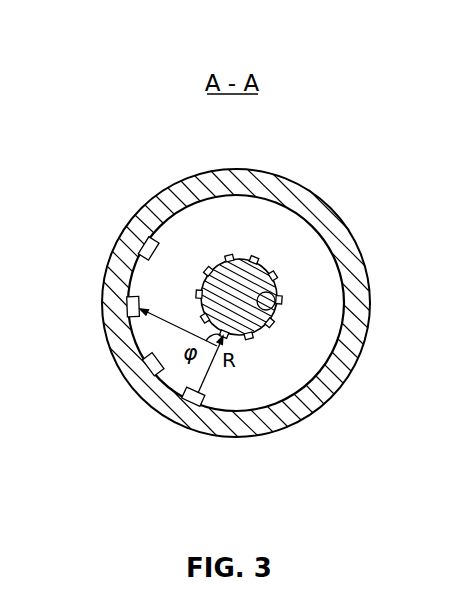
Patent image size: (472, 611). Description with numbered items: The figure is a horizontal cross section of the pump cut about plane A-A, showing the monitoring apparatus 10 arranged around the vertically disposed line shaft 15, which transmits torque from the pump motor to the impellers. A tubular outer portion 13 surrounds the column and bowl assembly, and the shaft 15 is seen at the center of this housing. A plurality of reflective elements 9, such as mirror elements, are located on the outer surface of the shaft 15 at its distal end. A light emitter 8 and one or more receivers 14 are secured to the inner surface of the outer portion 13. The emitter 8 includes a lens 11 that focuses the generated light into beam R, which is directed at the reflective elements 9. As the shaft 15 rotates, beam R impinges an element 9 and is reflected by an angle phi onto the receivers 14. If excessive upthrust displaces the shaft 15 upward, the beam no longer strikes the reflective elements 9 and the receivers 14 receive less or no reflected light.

The light emitter 8 is at (168, 393).
The reflective elements 9 is at (253, 261).
The monitoring apparatus 10 is at (219, 391).
The lens 11 is at (185, 403).
The tubular outer portion 13 is at (236, 294).
The receivers 14 is at (138, 242).
The line shaft 15 is at (273, 297).